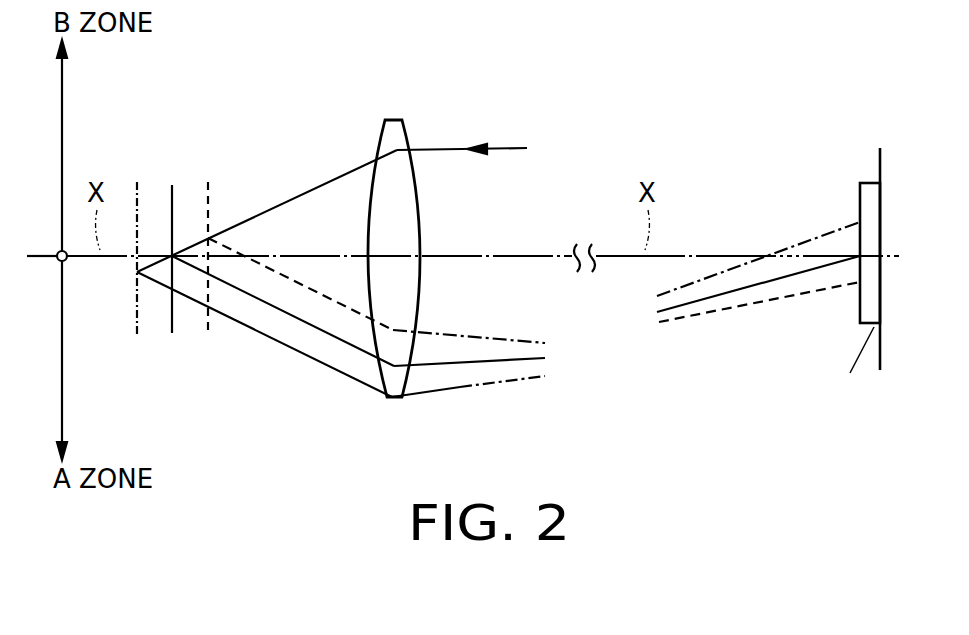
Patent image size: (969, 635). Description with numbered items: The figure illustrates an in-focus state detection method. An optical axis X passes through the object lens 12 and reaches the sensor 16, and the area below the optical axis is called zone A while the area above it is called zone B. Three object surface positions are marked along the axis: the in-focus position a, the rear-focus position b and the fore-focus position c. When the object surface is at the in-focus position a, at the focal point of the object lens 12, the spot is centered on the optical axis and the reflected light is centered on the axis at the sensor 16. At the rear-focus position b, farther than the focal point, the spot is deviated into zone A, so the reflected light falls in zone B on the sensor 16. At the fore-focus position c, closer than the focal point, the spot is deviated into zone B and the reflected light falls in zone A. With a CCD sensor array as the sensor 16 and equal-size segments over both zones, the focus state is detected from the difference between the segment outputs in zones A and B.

The object lens 12 is at (391, 122).
The sensor 16 is at (866, 312).
The in-focus position a is at (172, 333).
The rear-focus position b is at (137, 335).
The fore-focus position c is at (208, 335).